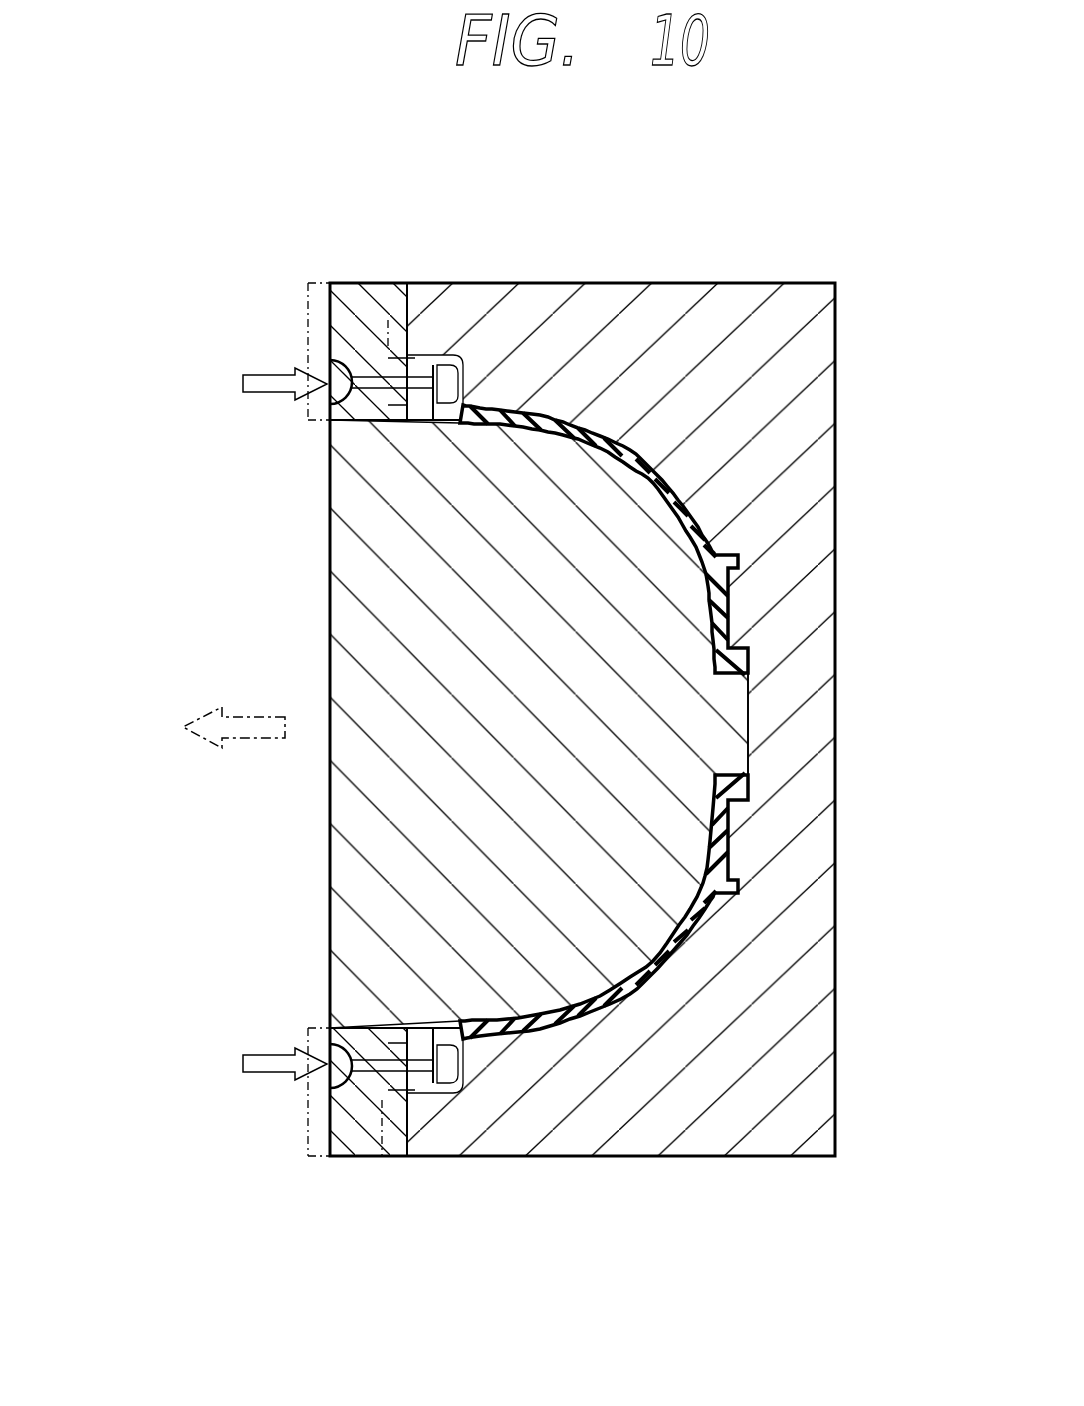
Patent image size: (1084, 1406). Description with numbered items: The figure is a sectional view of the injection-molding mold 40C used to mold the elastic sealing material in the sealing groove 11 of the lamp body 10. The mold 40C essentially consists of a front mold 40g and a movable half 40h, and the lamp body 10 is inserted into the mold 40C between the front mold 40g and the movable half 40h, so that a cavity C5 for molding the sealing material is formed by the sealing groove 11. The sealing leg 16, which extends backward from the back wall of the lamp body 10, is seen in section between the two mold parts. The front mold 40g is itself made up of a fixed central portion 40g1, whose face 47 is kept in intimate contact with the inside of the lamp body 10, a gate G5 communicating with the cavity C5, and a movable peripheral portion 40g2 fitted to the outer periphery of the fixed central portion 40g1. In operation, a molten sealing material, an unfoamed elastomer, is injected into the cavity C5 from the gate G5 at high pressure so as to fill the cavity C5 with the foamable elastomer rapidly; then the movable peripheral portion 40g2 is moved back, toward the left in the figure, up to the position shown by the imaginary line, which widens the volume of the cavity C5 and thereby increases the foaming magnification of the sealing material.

The injection-molding mold 40C is at (745, 197).
The front mold 40g is at (430, 739).
The fixed central portion 40g1 is at (395, 855).
The movable peripheral portion 40g2 is at (367, 283).
The movable half 40h is at (668, 283).
The lamp body 10 is at (668, 484).
The sealing leg 16 is at (730, 867).
The face 47 is at (730, 622).
The sealing groove 11 is at (407, 373).
The gate G5 is at (372, 392).
The cavity C5 is at (440, 398).